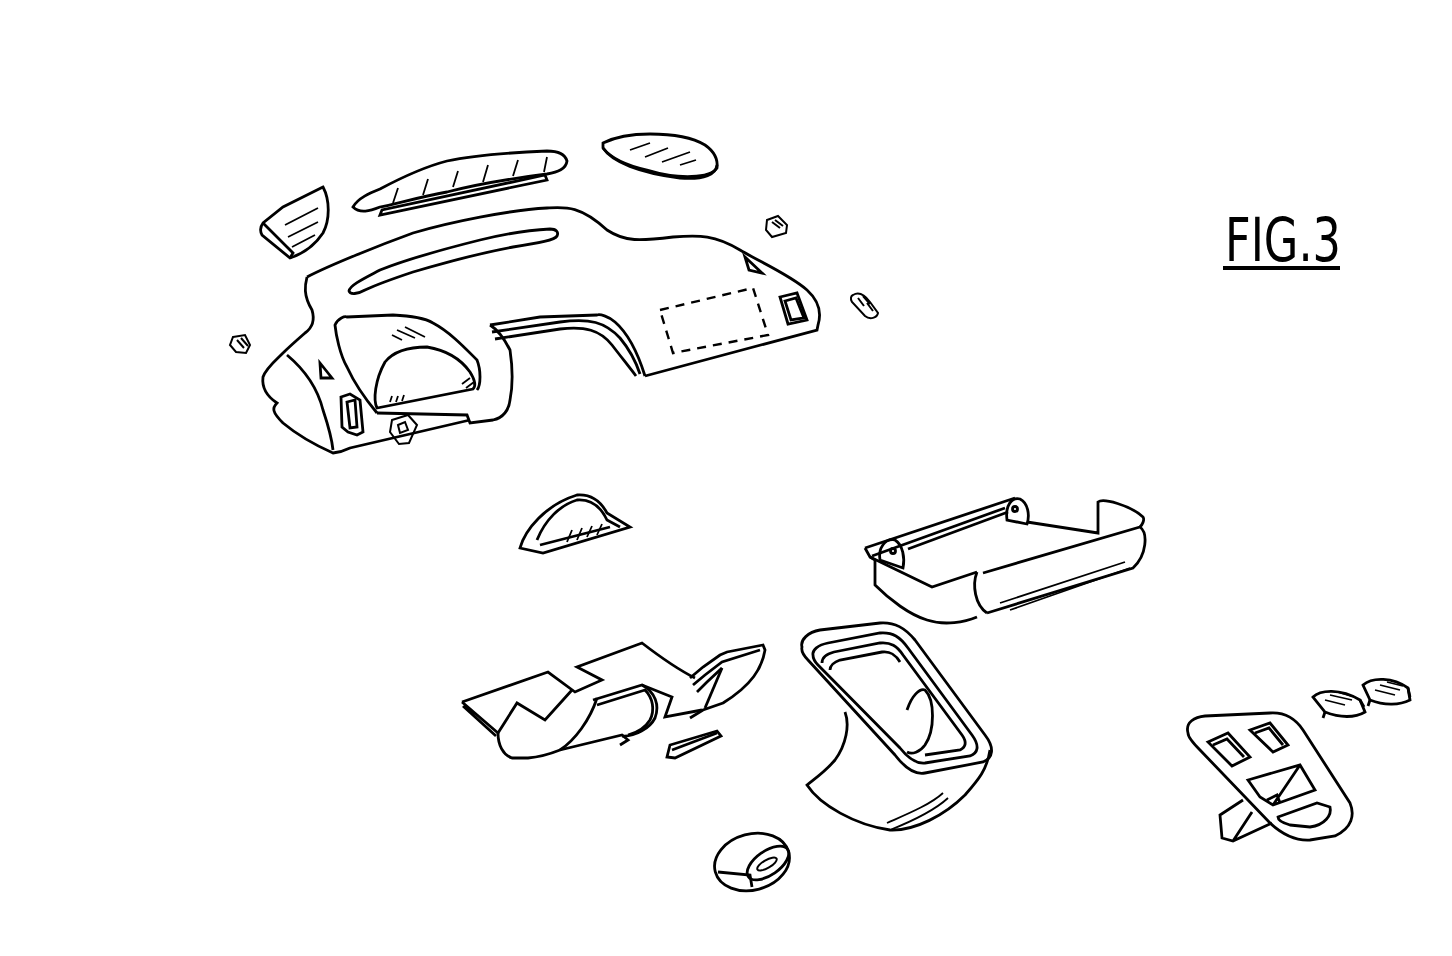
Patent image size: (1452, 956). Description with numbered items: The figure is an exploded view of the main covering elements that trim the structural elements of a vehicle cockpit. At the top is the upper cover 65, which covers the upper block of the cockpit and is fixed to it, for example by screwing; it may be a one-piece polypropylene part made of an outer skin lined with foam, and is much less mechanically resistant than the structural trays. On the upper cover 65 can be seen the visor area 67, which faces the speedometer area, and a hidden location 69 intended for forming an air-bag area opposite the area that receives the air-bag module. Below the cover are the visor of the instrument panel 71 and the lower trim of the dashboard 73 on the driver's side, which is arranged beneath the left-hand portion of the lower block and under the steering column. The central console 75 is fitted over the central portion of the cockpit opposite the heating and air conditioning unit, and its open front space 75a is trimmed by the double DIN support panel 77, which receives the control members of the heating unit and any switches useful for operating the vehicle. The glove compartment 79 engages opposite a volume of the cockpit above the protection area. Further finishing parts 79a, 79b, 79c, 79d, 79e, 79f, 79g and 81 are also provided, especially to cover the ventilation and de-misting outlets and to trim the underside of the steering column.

The upper cover 65 is at (660, 345).
The visor area 67 is at (390, 353).
The hidden location for an air-bag area 69 is at (743, 327).
The visor of the instrument panel 71 is at (522, 555).
The lower trim of the dashboard 73 is at (540, 738).
The central console 75 is at (917, 800).
The open front space 75a is at (907, 710).
The double DIN support panel 77 is at (1240, 723).
The glove compartment 79 is at (1120, 540).
The finishing part 79a is at (237, 348).
The finishing part 79b is at (283, 210).
The finishing part 79c is at (483, 168).
The finishing part 79d is at (683, 150).
The finishing part 79e is at (787, 227).
The finishing part 79f is at (873, 303).
The finishing part 79g is at (420, 432).
The finishing part 81 is at (730, 857).